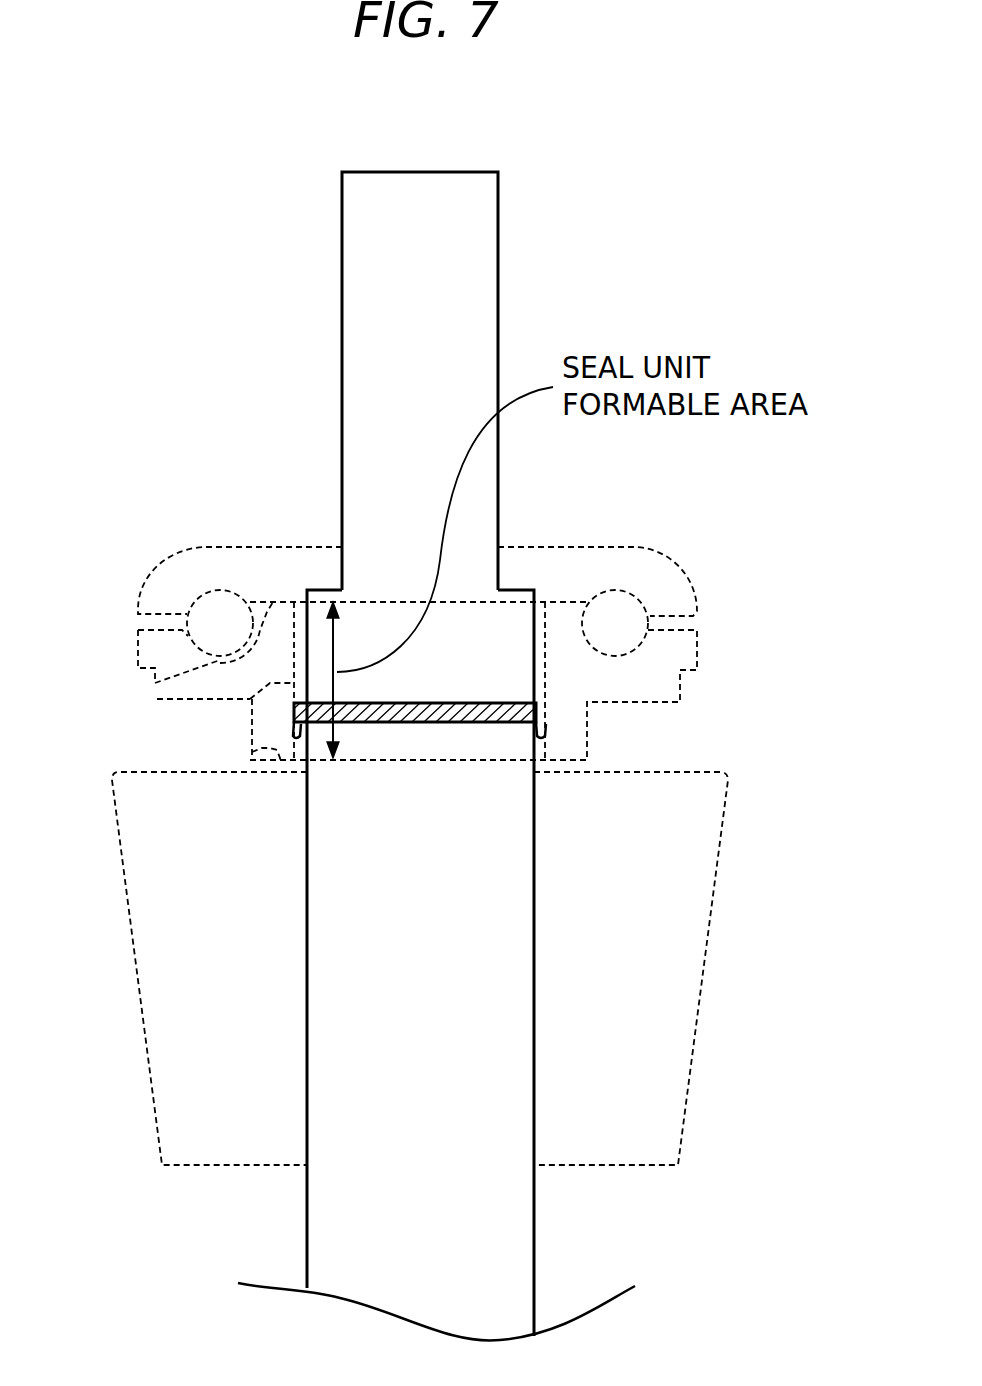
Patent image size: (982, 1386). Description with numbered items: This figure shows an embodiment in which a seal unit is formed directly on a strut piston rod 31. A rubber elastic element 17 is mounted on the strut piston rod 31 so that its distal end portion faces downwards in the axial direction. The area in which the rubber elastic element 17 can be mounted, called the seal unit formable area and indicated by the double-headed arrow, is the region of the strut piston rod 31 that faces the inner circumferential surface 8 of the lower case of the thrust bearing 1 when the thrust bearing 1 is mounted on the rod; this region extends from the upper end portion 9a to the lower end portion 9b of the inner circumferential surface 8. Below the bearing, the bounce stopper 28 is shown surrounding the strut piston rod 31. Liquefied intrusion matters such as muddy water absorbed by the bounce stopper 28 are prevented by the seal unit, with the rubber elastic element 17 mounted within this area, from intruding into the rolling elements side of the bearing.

The thrust bearing 1 is at (645, 535).
The inner circumferential surface 8 is at (248, 702).
The upper end portion 9a is at (157, 683).
The lower end portion 9b is at (248, 752).
The rubber elastic element 17 is at (549, 718).
The bounce stopper 28 is at (678, 1074).
The strut piston rod 31 is at (518, 1217).